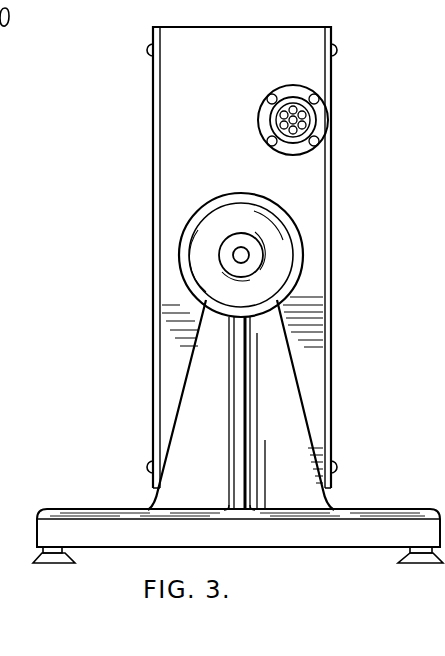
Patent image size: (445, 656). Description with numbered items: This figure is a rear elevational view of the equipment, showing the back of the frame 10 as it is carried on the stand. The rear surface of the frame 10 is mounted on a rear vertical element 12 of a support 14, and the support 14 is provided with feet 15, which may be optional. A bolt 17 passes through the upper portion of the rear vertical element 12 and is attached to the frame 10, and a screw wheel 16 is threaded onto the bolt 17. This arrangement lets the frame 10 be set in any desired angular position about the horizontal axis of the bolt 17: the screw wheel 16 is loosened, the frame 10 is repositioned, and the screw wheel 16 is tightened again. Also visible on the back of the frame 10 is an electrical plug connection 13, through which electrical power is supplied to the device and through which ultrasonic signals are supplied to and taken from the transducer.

The frame 10 is at (195, 79).
The rear vertical element 12 is at (284, 402).
The electrical plug connection 13 is at (307, 116).
The support 14 is at (390, 519).
The feet 15 is at (58, 559).
The screw wheel 16 is at (302, 246).
The bolt 17 is at (236, 250).